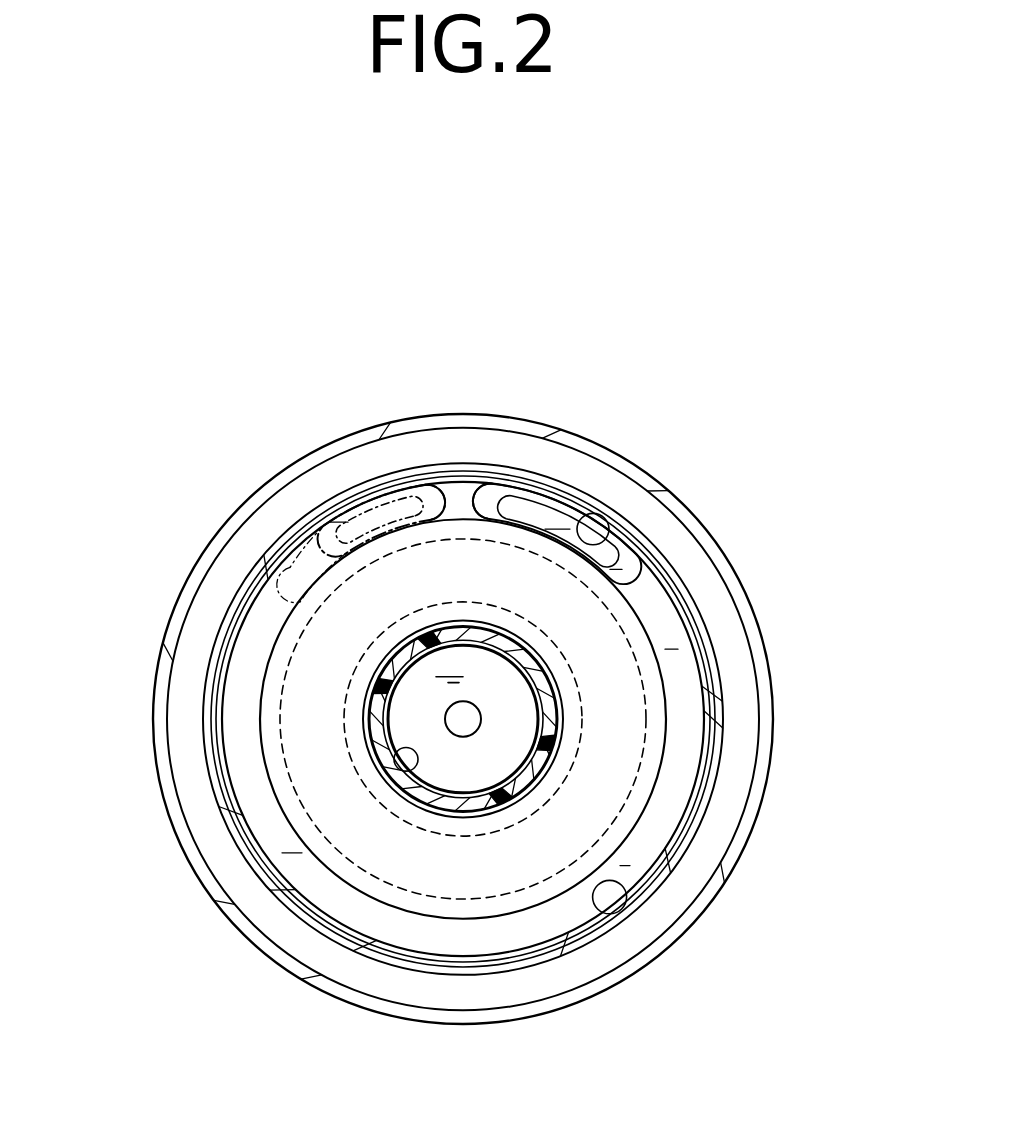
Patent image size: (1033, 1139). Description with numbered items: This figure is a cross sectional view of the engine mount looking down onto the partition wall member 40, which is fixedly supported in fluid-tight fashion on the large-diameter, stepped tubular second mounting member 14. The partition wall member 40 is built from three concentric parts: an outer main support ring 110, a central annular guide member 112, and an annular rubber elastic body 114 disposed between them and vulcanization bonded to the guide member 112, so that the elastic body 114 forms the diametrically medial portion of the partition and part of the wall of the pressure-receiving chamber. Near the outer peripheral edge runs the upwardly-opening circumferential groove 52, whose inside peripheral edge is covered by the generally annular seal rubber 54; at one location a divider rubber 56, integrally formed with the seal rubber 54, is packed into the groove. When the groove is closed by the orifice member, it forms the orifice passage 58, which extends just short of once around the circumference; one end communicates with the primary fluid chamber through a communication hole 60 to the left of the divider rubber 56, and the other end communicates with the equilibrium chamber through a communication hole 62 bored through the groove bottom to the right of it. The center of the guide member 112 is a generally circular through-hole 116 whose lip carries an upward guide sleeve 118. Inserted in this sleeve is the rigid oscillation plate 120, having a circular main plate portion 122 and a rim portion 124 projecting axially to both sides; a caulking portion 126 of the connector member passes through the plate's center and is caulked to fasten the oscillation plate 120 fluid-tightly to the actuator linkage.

The second mounting member 14 is at (723, 700).
The partition wall member 40 is at (226, 850).
The circumferential groove 52 is at (628, 893).
The seal rubber 54 is at (635, 813).
The divider rubber 56 is at (452, 505).
The orifice passage 58 is at (380, 920).
The communication hole 60 is at (322, 500).
The communication hole 62 is at (603, 533).
The main support ring 110 is at (545, 945).
The guide member 112 is at (570, 676).
The annular rubber elastic body 114 is at (325, 655).
The through-hole 116 is at (415, 800).
The guide sleeve 118 is at (365, 718).
The oscillation plate 120 is at (463, 600).
The main plate portion 122 is at (474, 773).
The rim portion 124 is at (537, 757).
The caulking portion 126 is at (462, 720).